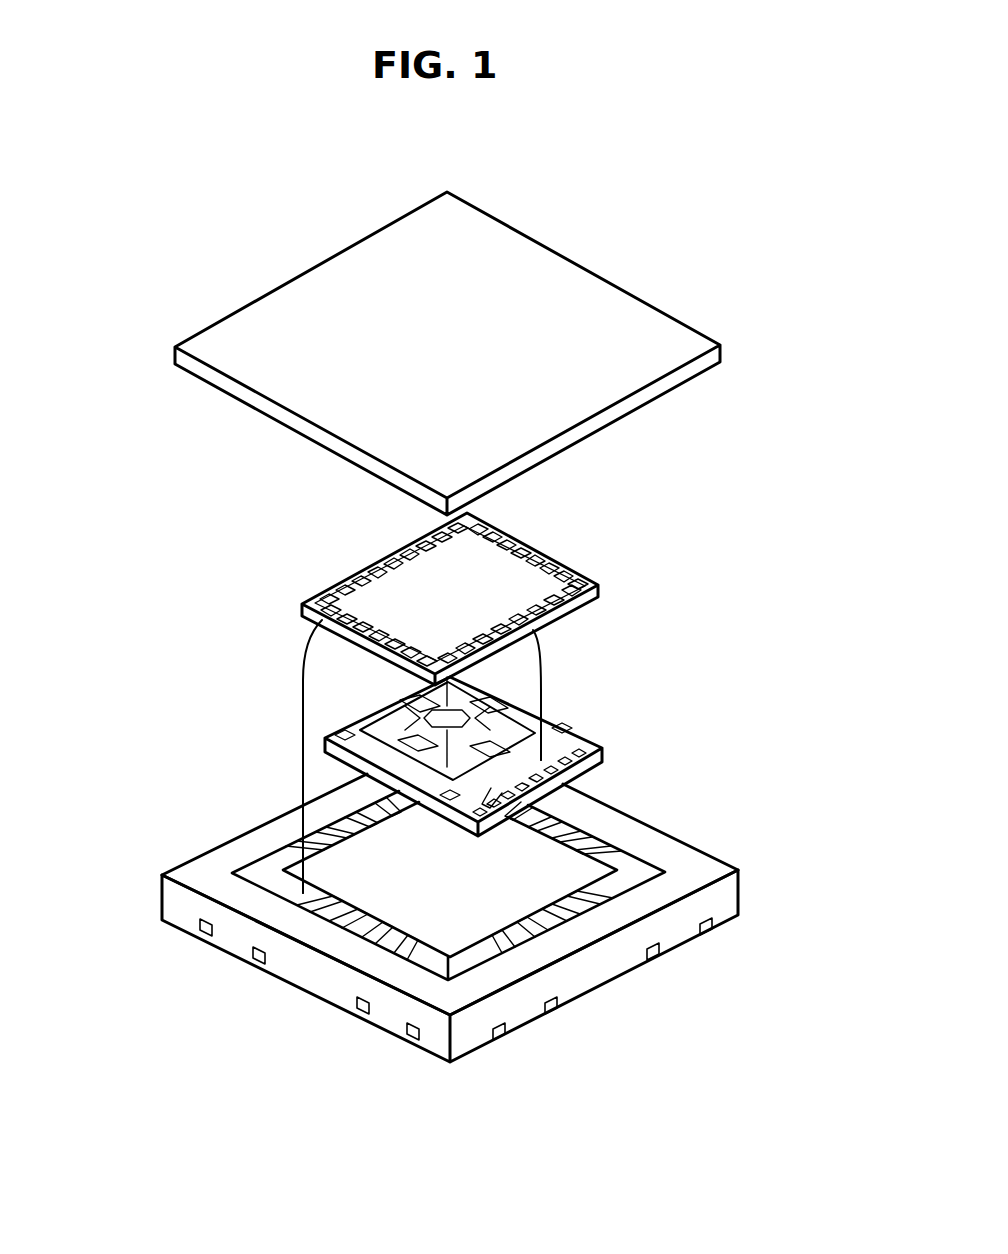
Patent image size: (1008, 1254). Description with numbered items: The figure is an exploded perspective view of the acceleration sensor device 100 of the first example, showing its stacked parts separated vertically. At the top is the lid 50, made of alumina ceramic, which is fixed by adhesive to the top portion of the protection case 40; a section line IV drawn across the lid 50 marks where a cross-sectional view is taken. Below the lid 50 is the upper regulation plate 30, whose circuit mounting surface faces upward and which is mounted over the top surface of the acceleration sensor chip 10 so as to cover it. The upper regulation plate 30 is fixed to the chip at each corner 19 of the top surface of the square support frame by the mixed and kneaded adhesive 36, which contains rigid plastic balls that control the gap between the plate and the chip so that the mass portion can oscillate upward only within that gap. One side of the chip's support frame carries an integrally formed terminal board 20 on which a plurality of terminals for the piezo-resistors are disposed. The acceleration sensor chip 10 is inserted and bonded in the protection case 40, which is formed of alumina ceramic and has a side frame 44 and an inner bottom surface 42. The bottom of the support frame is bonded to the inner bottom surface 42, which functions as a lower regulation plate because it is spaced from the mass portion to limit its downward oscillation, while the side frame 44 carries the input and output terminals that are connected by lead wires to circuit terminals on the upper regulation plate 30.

The acceleration sensor device 100 is at (112, 320).
The lid 50 is at (570, 315).
The upper regulation plate 30 is at (573, 563).
The acceleration sensor chip 10 is at (543, 663).
The corner 19 is at (560, 730).
The adhesive 36 is at (422, 791).
The terminal board 20 is at (595, 745).
The protection case 40 is at (468, 918).
The inner bottom surface 42 is at (420, 905).
The side frame 44 is at (213, 880).
The line IV- IV is at (650, 457).